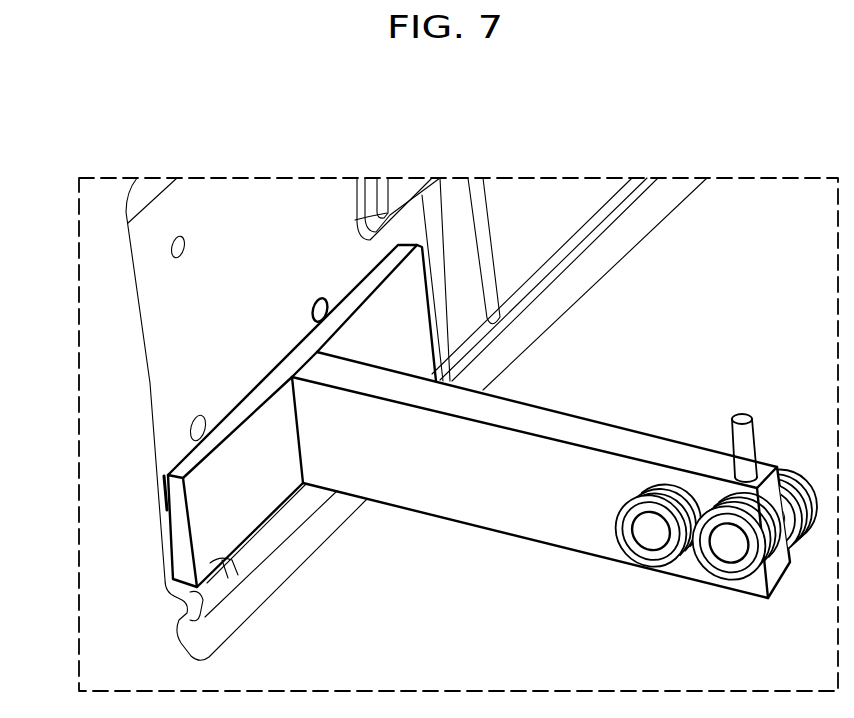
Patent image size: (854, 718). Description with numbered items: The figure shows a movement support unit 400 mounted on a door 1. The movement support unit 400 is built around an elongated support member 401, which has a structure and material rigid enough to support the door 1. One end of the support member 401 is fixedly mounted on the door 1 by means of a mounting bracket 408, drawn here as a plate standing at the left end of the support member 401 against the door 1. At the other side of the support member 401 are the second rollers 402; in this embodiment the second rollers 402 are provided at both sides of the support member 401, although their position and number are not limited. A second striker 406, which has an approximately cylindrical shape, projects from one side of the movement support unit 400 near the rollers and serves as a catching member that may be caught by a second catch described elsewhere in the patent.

The door 1 is at (245, 199).
The movement support unit 400 is at (418, 456).
The support member 401 is at (528, 525).
The second rollers 402 is at (722, 560).
The second striker 406 is at (741, 413).
The mounting bracket 408 is at (197, 523).